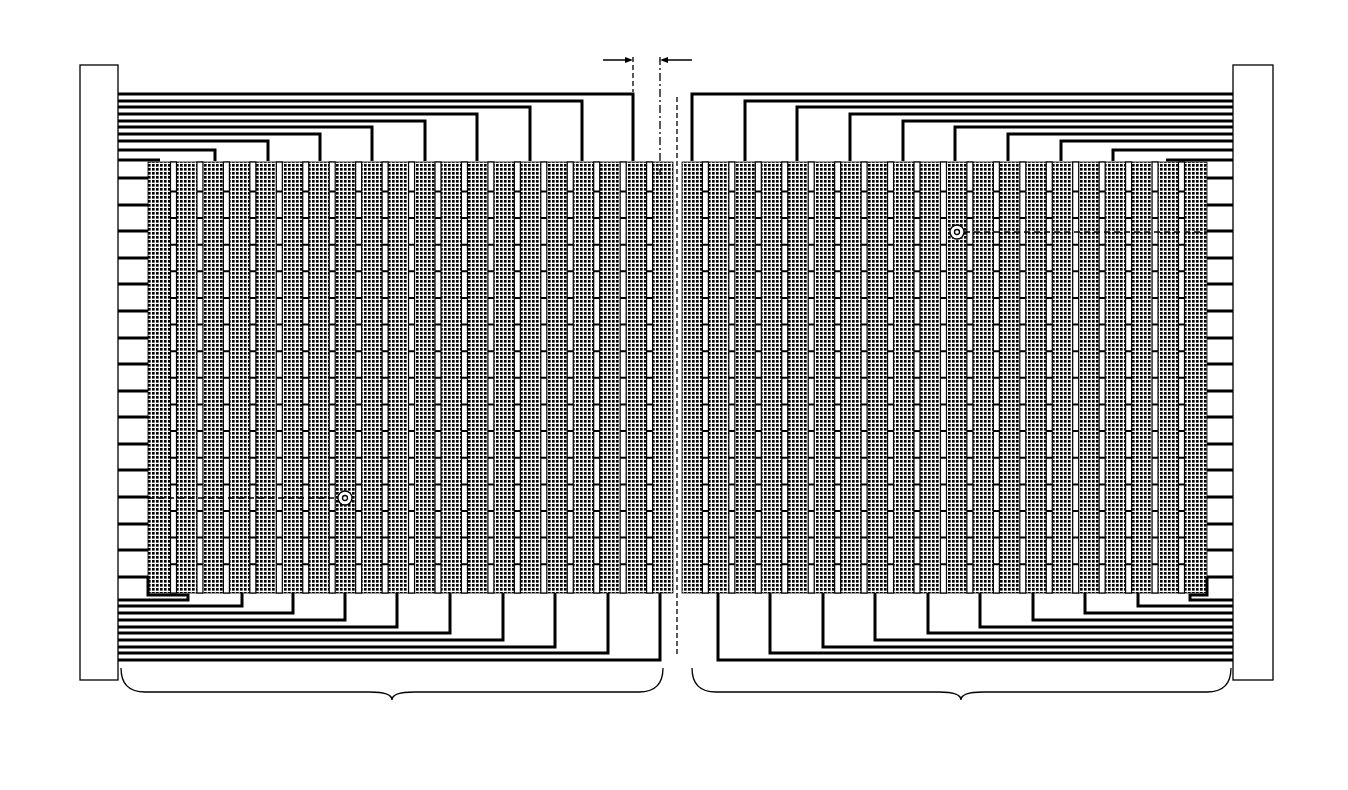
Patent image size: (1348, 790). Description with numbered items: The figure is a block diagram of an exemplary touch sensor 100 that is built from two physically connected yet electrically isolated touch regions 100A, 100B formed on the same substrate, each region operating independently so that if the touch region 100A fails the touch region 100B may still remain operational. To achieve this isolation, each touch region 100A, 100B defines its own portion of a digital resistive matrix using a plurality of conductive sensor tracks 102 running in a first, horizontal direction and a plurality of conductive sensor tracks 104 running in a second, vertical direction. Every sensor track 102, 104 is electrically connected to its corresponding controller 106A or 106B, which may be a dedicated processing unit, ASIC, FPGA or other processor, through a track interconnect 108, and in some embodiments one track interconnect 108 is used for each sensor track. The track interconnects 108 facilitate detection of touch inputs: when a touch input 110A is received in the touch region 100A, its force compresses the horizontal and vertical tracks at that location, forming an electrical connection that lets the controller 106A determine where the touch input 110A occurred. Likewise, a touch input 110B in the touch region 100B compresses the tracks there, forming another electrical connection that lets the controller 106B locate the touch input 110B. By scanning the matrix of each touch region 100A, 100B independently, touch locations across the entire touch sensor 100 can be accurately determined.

The touch sensor 100 is at (778, 33).
The touch region 100A is at (397, 449).
The touch region 100B is at (956, 449).
The conductive sensor tracks 102 is at (148, 250).
The conductive sensor tracks 104 is at (580, 172).
The controller 106A is at (88, 683).
The controller 106B is at (1243, 683).
The track interconnect 108 is at (305, 92).
The touch input 110A is at (343, 505).
The touch input 110B is at (958, 226).